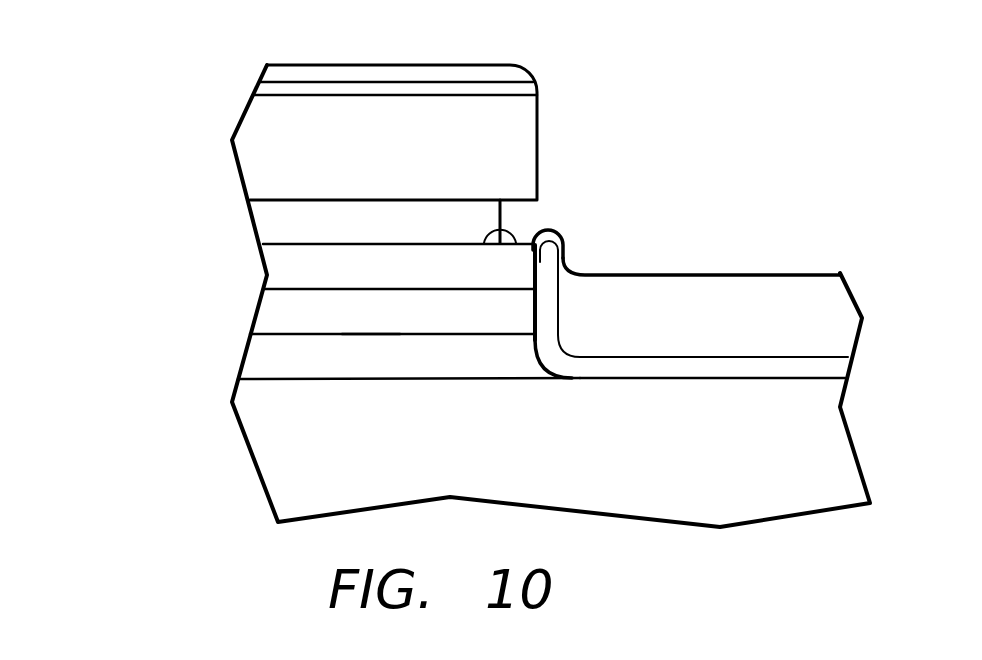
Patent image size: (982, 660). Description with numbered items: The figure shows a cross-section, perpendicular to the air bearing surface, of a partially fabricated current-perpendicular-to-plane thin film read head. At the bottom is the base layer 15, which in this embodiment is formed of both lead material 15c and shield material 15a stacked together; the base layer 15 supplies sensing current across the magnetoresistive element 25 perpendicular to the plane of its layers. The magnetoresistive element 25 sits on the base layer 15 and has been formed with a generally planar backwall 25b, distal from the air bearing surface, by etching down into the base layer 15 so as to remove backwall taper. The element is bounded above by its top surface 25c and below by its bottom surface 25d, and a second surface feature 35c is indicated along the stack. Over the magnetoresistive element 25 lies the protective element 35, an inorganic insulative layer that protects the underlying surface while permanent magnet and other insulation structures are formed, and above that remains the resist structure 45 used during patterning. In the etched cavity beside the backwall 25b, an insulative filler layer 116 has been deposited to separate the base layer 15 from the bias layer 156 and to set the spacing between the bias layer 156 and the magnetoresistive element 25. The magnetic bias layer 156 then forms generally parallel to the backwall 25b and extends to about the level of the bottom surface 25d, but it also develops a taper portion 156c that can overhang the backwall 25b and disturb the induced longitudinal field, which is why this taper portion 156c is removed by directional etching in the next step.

The base layer 15 is at (222, 474).
The shield material 15a is at (292, 440).
The lead material 15c is at (276, 365).
The magnetoresistive element 25 is at (290, 313).
The backwall 25b is at (540, 303).
The top surface 25c is at (402, 293).
The bottom surface 25d is at (342, 334).
The protective element 35 is at (290, 269).
The protruding portion of second insulating layer 35c is at (486, 238).
The resist structure 45 is at (291, 173).
The filler layer 116 is at (772, 372).
The bias layer 156 is at (762, 310).
The taper portion 156c is at (543, 228).